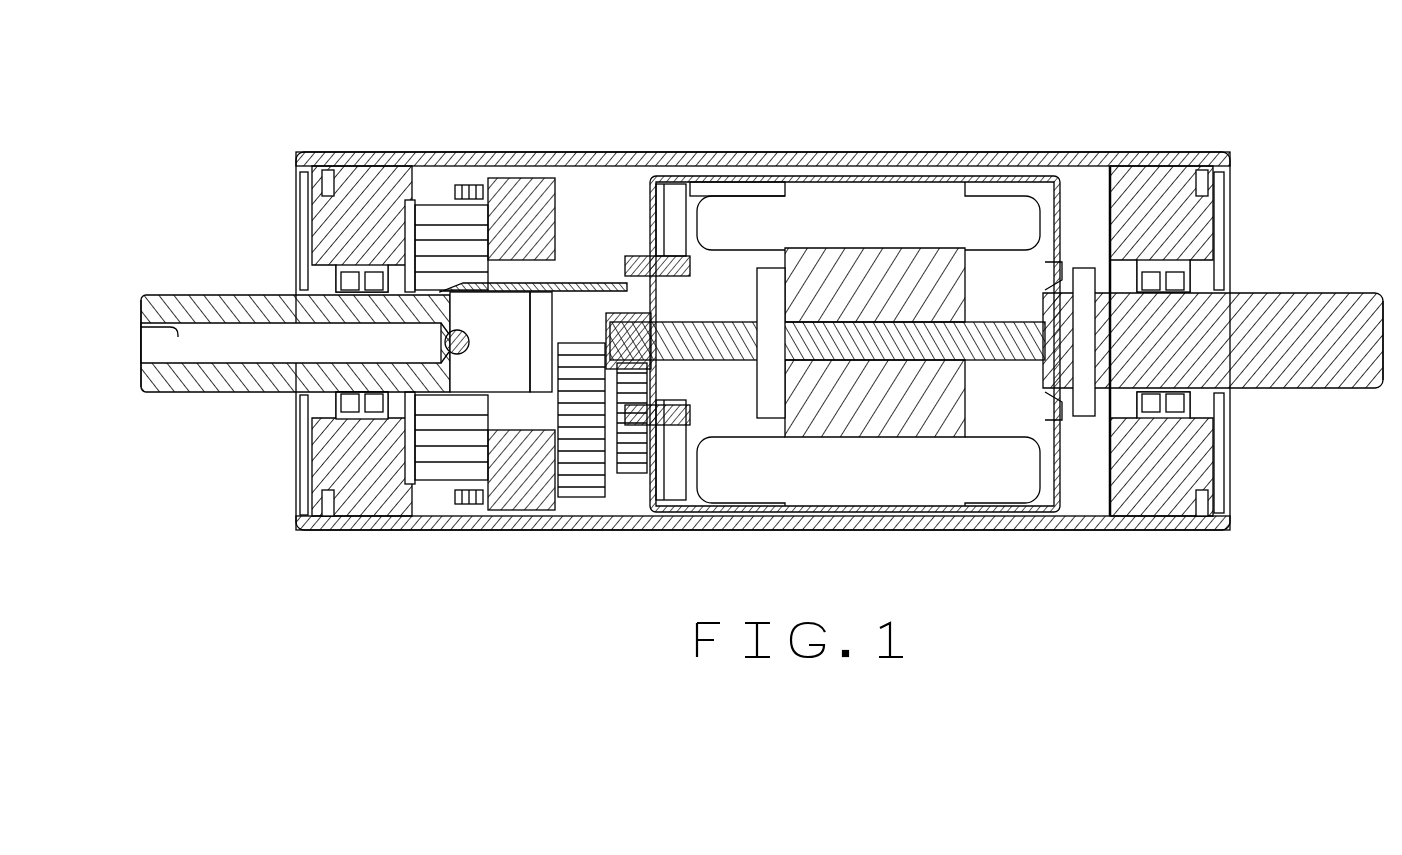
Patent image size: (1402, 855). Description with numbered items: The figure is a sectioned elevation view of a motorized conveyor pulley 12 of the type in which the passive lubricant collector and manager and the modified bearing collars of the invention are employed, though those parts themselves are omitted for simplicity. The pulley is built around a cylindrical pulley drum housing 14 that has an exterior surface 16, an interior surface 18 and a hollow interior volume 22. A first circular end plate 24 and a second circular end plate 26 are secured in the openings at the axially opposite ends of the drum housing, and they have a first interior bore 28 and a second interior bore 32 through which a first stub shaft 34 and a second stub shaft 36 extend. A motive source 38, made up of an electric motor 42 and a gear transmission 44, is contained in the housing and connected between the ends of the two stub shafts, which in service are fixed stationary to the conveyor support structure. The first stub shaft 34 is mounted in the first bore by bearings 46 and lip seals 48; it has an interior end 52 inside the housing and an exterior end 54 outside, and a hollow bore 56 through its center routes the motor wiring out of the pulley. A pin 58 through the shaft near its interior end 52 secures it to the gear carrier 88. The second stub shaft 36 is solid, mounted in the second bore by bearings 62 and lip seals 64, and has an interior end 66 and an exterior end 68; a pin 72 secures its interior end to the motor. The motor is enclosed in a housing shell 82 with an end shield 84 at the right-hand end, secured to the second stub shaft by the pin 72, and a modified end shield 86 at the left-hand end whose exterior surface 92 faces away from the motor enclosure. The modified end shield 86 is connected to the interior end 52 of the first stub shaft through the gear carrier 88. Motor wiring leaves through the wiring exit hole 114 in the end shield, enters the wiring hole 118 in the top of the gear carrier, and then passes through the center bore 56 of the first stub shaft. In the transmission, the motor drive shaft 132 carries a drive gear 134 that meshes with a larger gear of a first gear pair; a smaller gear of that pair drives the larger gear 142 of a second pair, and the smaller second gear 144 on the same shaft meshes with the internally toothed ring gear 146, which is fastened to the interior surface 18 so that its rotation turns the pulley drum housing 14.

The motorized conveyor pulley 12 is at (955, 106).
The pulley drum housing 14 is at (990, 152).
The exterior surface 16 is at (1062, 152).
The interior surface 18 is at (622, 190).
The hollow interior volume 22 is at (640, 178).
The first circular end plate 24 is at (300, 176).
The second circular end plate 26 is at (1228, 188).
The first interior bore 28 is at (300, 288).
The second interior bore 32 is at (1232, 292).
The first stub shaft 34 is at (190, 294).
The second stub shaft 36 is at (1330, 294).
The motive source 38 is at (625, 500).
The electric motor 42 is at (902, 529).
The gear transmission 44 is at (572, 506).
The bearings 46 is at (330, 426).
The lip seals 48 is at (345, 200).
The interior end 52 is at (482, 318).
The exterior end 54 is at (145, 391).
The hollow bore 56 is at (178, 330).
The pin 58 is at (412, 250).
The bearings 62 is at (1222, 440).
The lip seals 64 is at (1225, 206).
The interior end 66 is at (1075, 425).
The exterior end 68 is at (1365, 392).
The pin 72 is at (1232, 392).
The housing shell 82 is at (870, 178).
The end shield 84 is at (1128, 258).
The modified end shield 86 is at (655, 526).
The gear carrier 88 is at (543, 240).
The exterior surface 92 is at (605, 275).
The wiring exit hole 114 is at (640, 255).
The wiring hole 118 is at (432, 284).
The drive shaft 132 is at (448, 402).
The drive gear 134 is at (412, 352).
The larger gear 142 is at (582, 494).
The smaller second gear 144 is at (512, 432).
The ring gear 146 is at (512, 238).